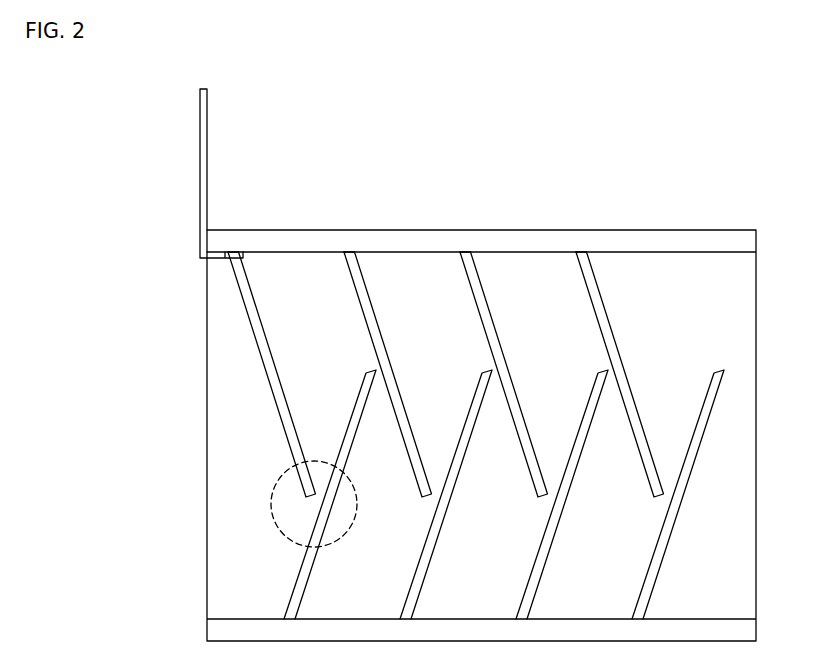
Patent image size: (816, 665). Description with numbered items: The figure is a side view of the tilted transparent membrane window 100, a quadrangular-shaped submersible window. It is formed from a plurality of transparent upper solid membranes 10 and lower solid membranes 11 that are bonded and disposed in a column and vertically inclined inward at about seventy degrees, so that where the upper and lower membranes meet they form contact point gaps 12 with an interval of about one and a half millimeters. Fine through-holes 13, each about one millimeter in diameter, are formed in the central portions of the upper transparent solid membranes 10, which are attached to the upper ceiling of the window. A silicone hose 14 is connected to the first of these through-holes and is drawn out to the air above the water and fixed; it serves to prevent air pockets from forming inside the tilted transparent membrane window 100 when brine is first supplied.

The tilted transparent membrane window 100 is at (552, 157).
The silicone hose 14 is at (202, 172).
The upper transparent solid membrane 10 is at (262, 363).
The fine through-hole 13 is at (580, 263).
The lower transparent solid membrane 11 is at (298, 577).
The contact point gap 12 is at (273, 504).